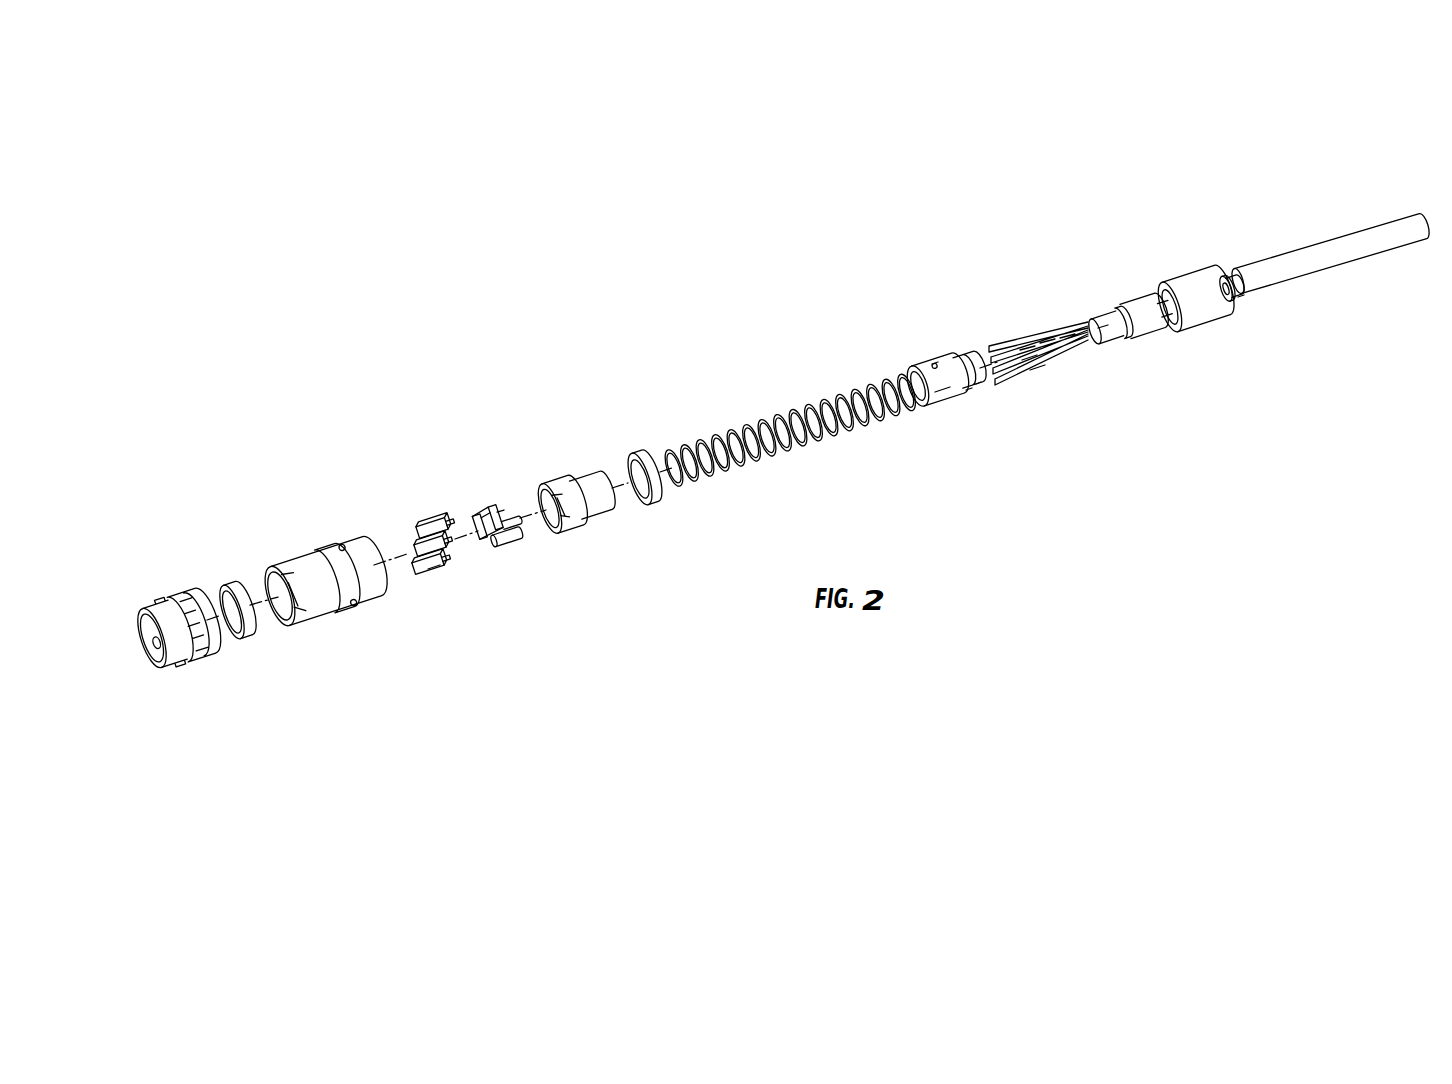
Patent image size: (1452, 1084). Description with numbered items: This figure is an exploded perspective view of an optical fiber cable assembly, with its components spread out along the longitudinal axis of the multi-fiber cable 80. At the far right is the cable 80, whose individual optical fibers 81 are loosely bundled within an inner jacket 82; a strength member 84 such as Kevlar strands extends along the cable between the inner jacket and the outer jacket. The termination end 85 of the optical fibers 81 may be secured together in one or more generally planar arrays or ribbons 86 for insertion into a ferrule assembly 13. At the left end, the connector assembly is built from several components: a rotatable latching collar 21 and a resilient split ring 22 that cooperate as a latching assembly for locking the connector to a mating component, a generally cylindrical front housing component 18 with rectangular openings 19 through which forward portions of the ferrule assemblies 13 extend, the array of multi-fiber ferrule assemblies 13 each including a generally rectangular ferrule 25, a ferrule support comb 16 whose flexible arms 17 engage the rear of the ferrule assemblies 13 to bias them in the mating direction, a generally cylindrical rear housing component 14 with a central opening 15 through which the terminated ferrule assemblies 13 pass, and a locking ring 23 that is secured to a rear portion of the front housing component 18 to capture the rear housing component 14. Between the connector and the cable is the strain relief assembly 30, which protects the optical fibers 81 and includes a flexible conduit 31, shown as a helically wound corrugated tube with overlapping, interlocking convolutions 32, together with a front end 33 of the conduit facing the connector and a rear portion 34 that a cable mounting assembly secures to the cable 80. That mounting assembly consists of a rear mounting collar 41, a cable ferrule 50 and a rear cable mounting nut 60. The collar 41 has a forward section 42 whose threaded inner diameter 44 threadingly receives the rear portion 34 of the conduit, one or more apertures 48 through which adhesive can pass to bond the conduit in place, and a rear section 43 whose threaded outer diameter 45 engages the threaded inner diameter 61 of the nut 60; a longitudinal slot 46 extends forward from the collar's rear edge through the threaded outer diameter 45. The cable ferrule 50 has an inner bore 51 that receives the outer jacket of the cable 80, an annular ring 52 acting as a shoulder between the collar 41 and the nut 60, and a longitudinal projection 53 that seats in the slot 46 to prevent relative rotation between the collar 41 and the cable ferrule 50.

The multi-fiber ferrule assembly 13 is at (424, 529).
The rear housing component 14 is at (594, 514).
The central opening 15 is at (552, 488).
The ferrule support comb 16 is at (487, 510).
The flexible arms 17 is at (500, 507).
The front housing component 18 is at (333, 551).
The rectangular openings 19 is at (281, 628).
The rotatable latching collar 21 is at (153, 606).
The resilient split ring 22 is at (232, 584).
The locking ring 23 is at (637, 455).
The ferrule 25 is at (430, 584).
The strain relief assembly 30 is at (800, 302).
The flexible conduit 31 is at (806, 462).
The overlapping convolutions 32 is at (775, 452).
The spring front end 33 is at (700, 486).
The rear portion of flexible conduit 34 is at (897, 414).
The rear mounting collar 41 is at (912, 368).
The forward section 42 is at (950, 396).
The rear section 43 is at (971, 392).
The threaded inner diameter 44 is at (912, 380).
The threaded outer diameter 45 is at (979, 384).
The longitudinal slot 46 is at (966, 372).
The apertures 48 is at (940, 362).
The cable ferrule 50 is at (1121, 331).
The inner bore 51 is at (1098, 345).
The annular ring 52 is at (1125, 340).
The longitudinal projection 53 is at (1106, 320).
The rear cable mounting nut 60 is at (1188, 334).
The threaded inner diameter 61 is at (1178, 314).
The multi-fiber cable 80 is at (1320, 246).
The optical fibers 81 is at (1042, 349).
The inner jacket 82 is at (1236, 278).
The strength member 84 is at (1240, 298).
The termination end 85 is at (1000, 350).
The ribbon 86 is at (1046, 353).